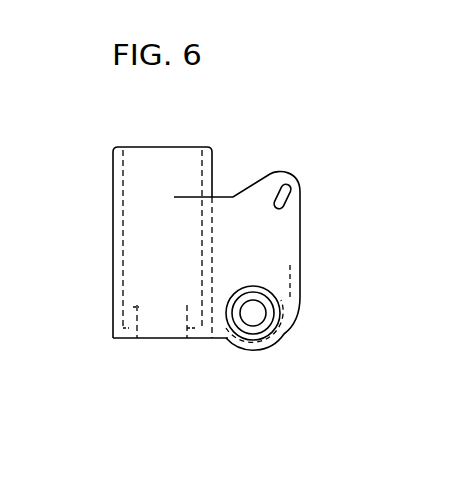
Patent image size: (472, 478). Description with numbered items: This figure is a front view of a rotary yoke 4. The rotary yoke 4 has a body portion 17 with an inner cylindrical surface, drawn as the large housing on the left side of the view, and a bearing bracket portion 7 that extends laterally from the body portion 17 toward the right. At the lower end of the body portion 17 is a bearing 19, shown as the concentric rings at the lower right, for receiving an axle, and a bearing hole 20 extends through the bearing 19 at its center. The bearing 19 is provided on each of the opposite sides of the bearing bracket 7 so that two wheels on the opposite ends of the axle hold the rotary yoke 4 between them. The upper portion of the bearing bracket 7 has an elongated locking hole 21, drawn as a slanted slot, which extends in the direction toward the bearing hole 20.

The rotary yoke 4 is at (281, 137).
The bearing bracket portion 7 is at (289, 251).
The body portion 17 is at (116, 213).
The bearing 19 is at (263, 330).
The bearing hole 20 is at (257, 313).
The elongated locking hole 21 is at (291, 194).